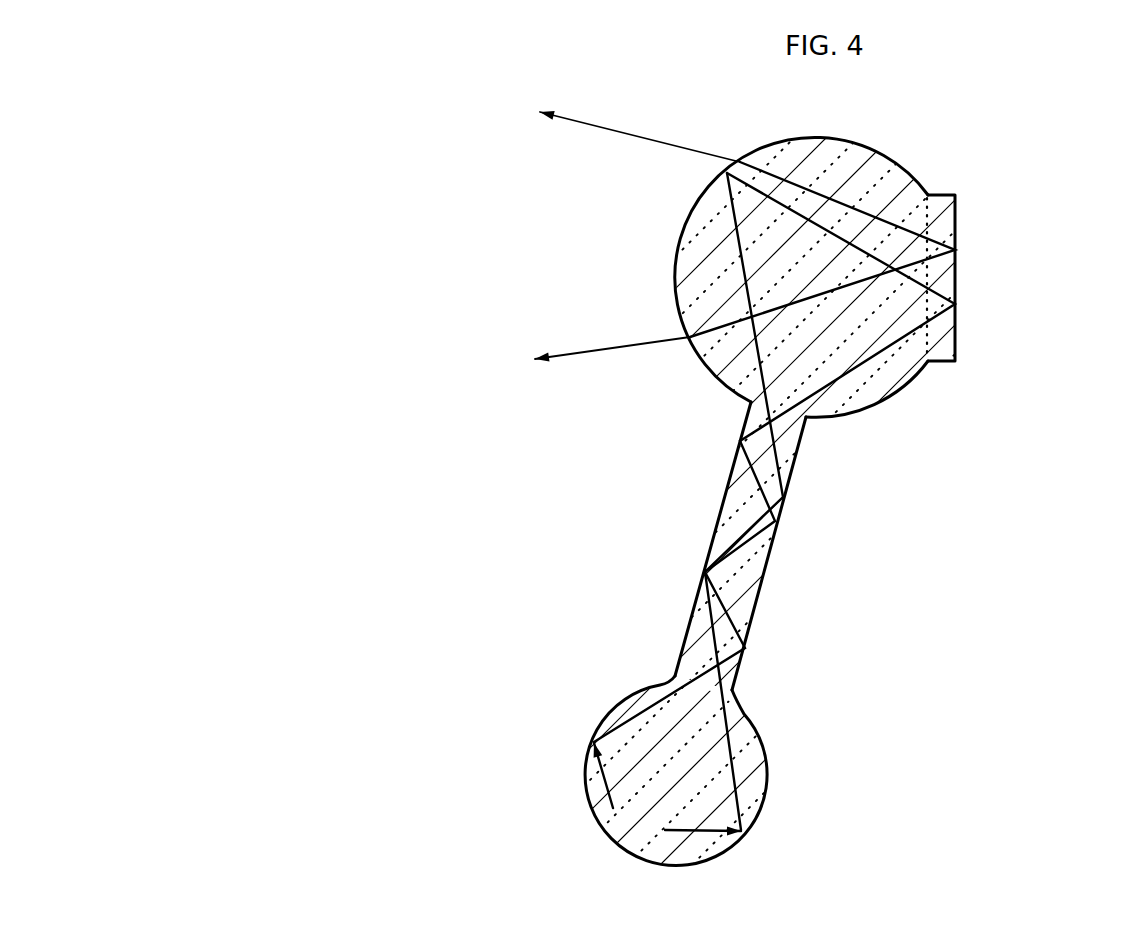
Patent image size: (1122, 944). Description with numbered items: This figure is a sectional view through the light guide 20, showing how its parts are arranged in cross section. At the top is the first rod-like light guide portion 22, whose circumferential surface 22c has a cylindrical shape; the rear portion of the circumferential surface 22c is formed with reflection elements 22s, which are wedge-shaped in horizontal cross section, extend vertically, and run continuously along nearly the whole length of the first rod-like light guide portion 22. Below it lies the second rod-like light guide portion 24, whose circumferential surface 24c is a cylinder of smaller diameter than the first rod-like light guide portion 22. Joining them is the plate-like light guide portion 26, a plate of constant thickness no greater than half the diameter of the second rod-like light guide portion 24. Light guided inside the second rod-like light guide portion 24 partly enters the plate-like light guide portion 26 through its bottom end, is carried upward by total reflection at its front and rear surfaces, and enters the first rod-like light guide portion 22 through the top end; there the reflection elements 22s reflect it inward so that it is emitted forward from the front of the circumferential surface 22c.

The light guide 20 is at (397, 138).
The first rod-like light guide portion 22 is at (853, 198).
The circumferential surface 22c is at (675, 275).
The reflection elements 22s is at (956, 277).
The second rod-like light guide portion 24 is at (745, 760).
The circumferential surface 24c is at (587, 768).
The plate-like light guide portion 26 is at (747, 568).